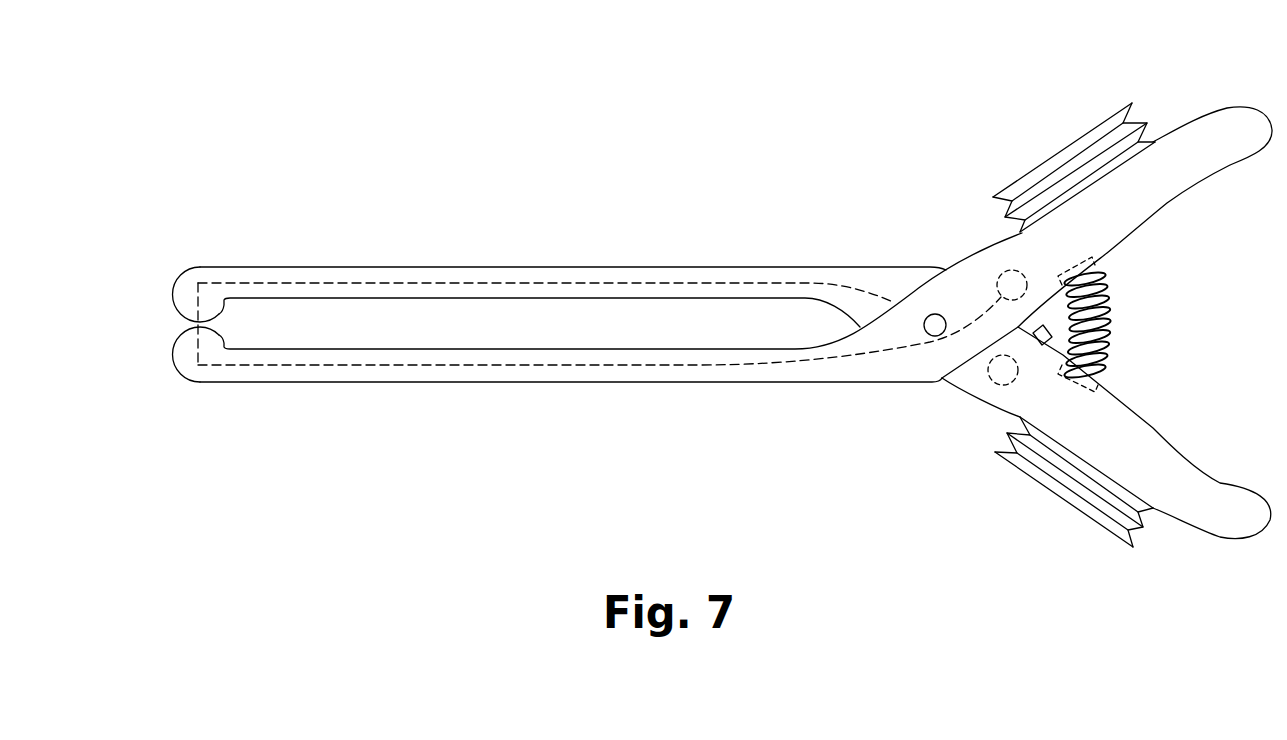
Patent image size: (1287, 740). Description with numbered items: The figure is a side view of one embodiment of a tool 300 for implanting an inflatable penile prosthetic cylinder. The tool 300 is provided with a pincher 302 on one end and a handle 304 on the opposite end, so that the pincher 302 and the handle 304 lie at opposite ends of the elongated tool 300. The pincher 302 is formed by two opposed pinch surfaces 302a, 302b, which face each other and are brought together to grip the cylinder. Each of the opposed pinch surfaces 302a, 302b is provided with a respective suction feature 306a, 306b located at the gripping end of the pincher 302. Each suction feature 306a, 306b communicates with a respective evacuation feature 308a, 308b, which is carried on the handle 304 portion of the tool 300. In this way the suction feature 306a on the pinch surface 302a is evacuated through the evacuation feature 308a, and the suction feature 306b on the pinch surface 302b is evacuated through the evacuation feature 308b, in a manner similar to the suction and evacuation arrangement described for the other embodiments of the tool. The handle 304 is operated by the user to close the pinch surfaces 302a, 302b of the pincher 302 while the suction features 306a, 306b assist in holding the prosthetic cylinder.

The tool 300 is at (673, 292).
The pincher 302 is at (548, 301).
The pinch surface 302a is at (516, 291).
The pinch surface 302b is at (548, 336).
The handle 304 is at (1188, 100).
The suction feature 306a is at (190, 324).
The suction feature 306b is at (188, 327).
The evacuation feature 308a is at (1018, 466).
The evacuation feature 308b is at (1078, 163).